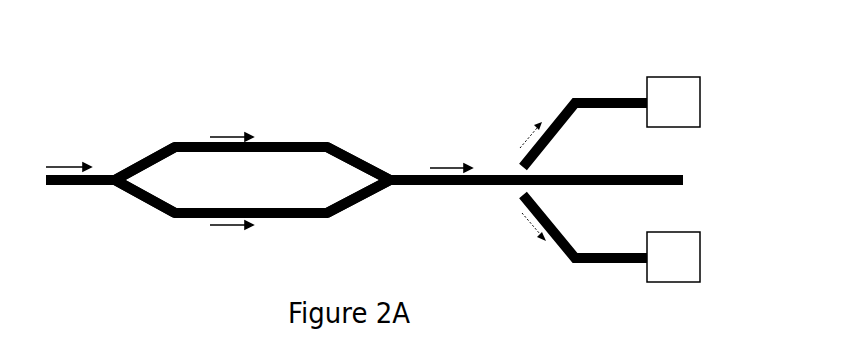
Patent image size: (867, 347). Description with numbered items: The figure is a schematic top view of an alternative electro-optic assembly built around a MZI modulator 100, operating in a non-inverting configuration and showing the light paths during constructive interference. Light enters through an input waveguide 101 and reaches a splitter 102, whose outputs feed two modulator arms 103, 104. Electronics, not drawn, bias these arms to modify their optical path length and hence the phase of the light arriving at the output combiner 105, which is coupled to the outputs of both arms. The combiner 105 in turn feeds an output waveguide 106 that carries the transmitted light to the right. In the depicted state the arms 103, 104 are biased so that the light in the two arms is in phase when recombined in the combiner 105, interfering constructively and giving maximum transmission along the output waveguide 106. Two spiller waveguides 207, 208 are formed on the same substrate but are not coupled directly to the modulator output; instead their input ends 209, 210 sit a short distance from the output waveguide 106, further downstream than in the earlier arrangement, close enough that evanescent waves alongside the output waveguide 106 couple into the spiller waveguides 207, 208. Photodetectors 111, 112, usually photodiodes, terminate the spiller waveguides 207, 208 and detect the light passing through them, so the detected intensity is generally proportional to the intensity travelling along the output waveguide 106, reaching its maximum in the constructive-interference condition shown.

The MZI modulator 100 is at (206, 109).
The input waveguide 101 is at (82, 186).
The splitter 102 is at (116, 187).
The modulator arm 103 is at (288, 143).
The modulator arm 104 is at (297, 218).
The output combiner 105 is at (390, 172).
The output waveguide 106 is at (657, 175).
The spiller waveguide 207 is at (581, 97).
The spiller waveguide 208 is at (575, 264).
The input end 209 is at (518, 167).
The input end 210 is at (518, 196).
The photodetector 111 is at (673, 77).
The photodetector 112 is at (673, 283).